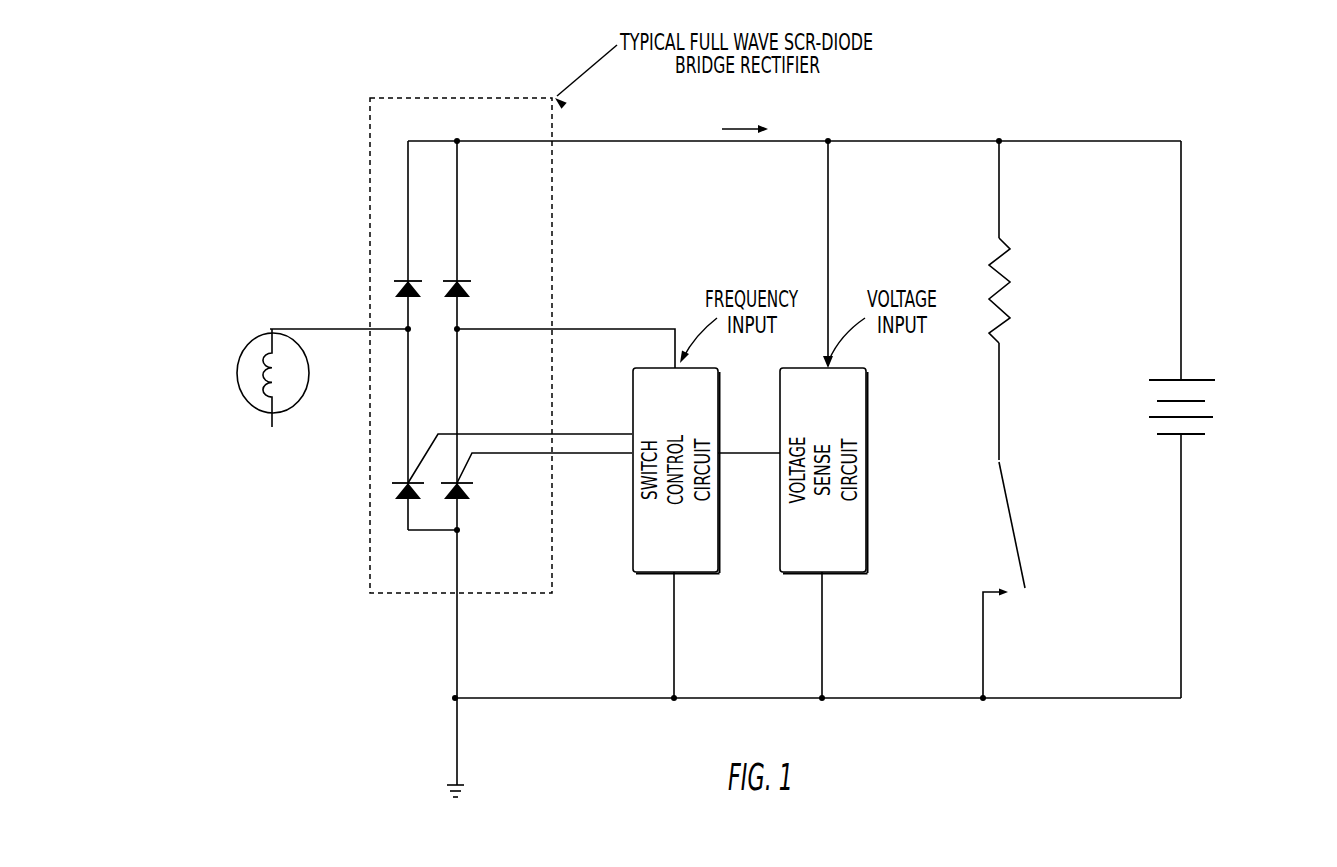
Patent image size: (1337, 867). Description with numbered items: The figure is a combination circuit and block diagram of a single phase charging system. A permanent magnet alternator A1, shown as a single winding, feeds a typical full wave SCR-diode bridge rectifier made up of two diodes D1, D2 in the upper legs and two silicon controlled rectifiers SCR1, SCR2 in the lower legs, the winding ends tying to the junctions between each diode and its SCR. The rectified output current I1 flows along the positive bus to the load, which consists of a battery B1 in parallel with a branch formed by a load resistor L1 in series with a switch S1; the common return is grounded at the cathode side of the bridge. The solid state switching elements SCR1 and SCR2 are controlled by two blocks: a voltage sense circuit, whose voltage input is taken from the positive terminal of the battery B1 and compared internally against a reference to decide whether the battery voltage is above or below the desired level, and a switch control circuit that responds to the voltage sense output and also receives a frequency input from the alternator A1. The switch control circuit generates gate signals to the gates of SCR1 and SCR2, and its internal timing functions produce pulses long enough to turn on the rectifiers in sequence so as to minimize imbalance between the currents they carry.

The diode D1 is at (400, 273).
The diode D2 is at (466, 273).
The silicon controlled rectifier SCR1 is at (489, 479).
The silicon controlled rectifier SCR2 is at (536, 488).
The permanent magnet alternator A1 is at (238, 322).
The current I1 is at (745, 115).
The load resistor L1 is at (1013, 300).
The switch S1 is at (1021, 580).
The battery B1 is at (1199, 419).